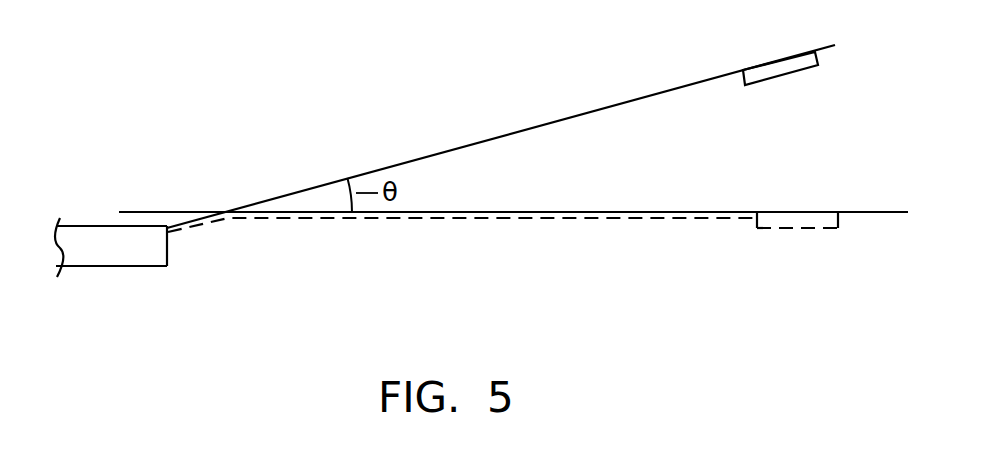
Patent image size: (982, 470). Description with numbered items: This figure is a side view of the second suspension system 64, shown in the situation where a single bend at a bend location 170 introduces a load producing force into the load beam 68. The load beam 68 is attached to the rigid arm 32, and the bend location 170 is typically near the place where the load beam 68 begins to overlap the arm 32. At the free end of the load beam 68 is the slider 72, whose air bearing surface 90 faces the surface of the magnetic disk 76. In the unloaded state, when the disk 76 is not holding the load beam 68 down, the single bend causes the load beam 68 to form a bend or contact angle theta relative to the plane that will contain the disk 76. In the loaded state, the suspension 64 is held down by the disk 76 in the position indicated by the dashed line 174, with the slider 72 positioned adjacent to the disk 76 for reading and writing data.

The rigid arm 32 is at (88, 248).
The bend location 170 is at (167, 228).
The second suspension system 64 is at (650, 60).
The load beam 68 is at (532, 127).
The dashed line 174 is at (335, 219).
The slider 72 is at (813, 143).
The air bearing surface 90 is at (743, 70).
The magnetic disk 76 is at (863, 212).